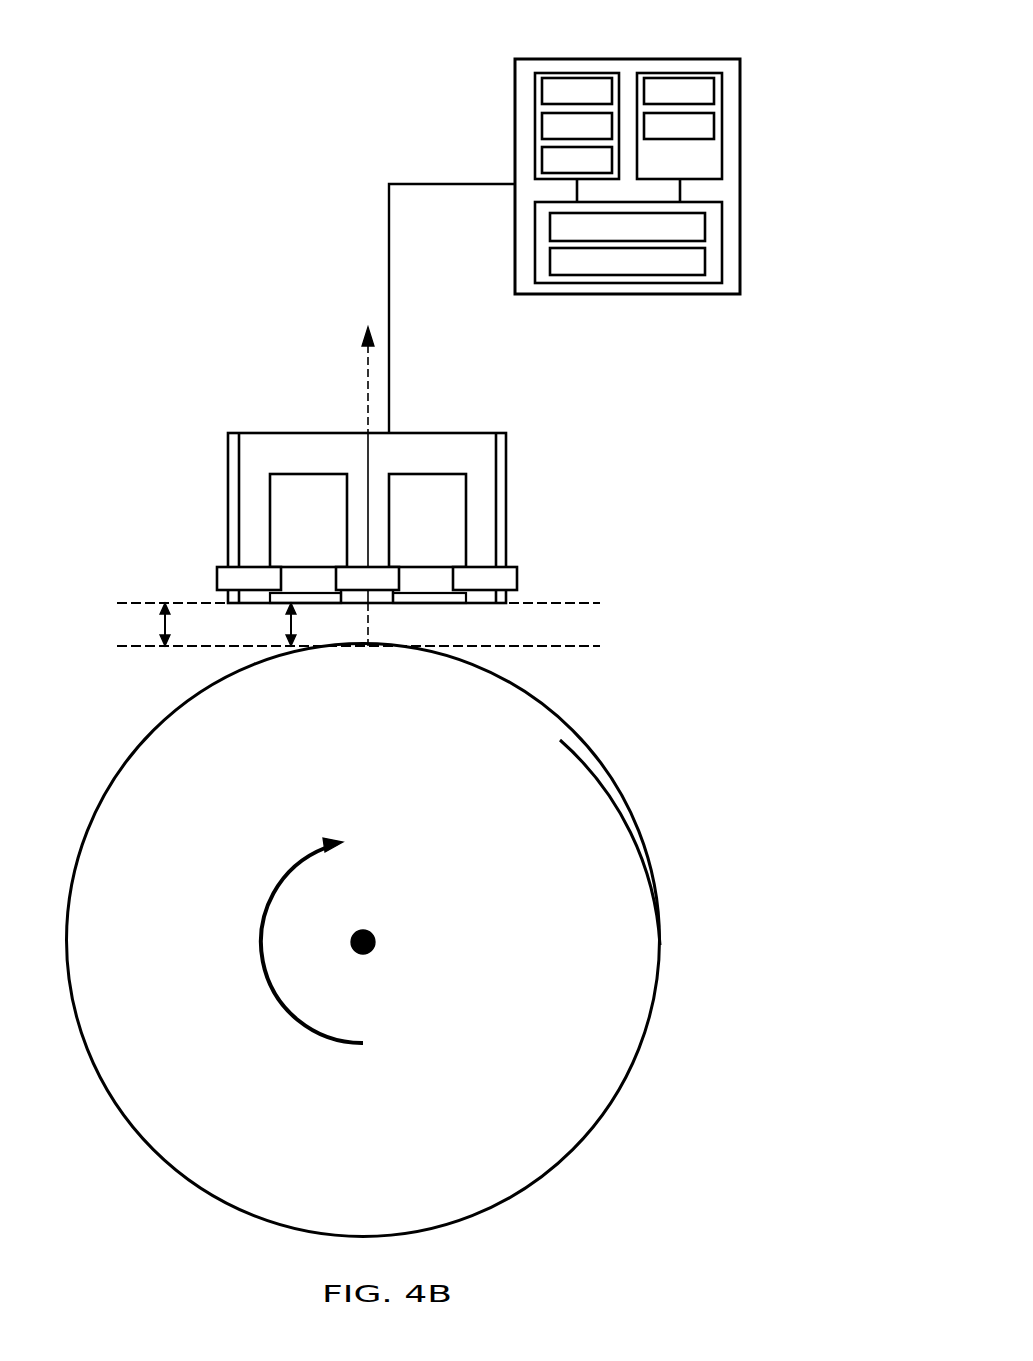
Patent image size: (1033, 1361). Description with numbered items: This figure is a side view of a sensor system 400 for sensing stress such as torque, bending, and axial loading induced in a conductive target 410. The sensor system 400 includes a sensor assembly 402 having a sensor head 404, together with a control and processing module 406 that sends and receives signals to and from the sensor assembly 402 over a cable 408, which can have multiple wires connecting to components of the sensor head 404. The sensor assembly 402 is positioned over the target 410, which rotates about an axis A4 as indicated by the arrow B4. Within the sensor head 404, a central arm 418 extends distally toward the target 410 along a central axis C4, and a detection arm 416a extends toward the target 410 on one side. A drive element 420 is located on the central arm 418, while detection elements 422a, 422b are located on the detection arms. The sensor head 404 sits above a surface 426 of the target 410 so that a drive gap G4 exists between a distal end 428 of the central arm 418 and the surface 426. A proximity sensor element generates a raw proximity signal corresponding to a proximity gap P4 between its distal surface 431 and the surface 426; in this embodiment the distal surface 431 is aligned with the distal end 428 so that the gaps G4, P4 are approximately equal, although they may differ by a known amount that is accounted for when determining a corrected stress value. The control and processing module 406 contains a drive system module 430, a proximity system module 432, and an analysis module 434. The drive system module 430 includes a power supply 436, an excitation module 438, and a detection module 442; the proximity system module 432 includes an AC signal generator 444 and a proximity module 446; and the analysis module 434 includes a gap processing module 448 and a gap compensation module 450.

The sensor system 400 is at (220, 141).
The sensor assembly 402 is at (220, 426).
The sensor head 404 is at (517, 453).
The control and processing module 406 is at (700, 294).
The cable 408 is at (389, 292).
The target 410 is at (624, 766).
The detection arm 416a is at (506, 502).
The central arm 418 is at (347, 510).
The drive element 420 is at (397, 567).
The detection element 422a is at (517, 574).
The detection element 422b is at (217, 574).
The surface 426 is at (660, 901).
The distal end 428 is at (380, 605).
The drive system module 430 is at (578, 73).
The distal surface 431 is at (283, 605).
The proximity system module 432 is at (680, 73).
The analysis module 434 is at (627, 294).
The power supply 436 is at (542, 93).
The excitation module 438 is at (542, 127).
The detection module 442 is at (542, 162).
The AC signal generator 444 is at (714, 89).
The proximity module 446 is at (714, 123).
The gap processing module 448 is at (705, 223).
The gap compensation module 450 is at (705, 258).
The central axis C4 is at (366, 362).
The drive gap G4 is at (163, 624).
The proximity gap P4 is at (292, 615).
The axis A4 is at (375, 942).
The arrow B4 is at (335, 842).